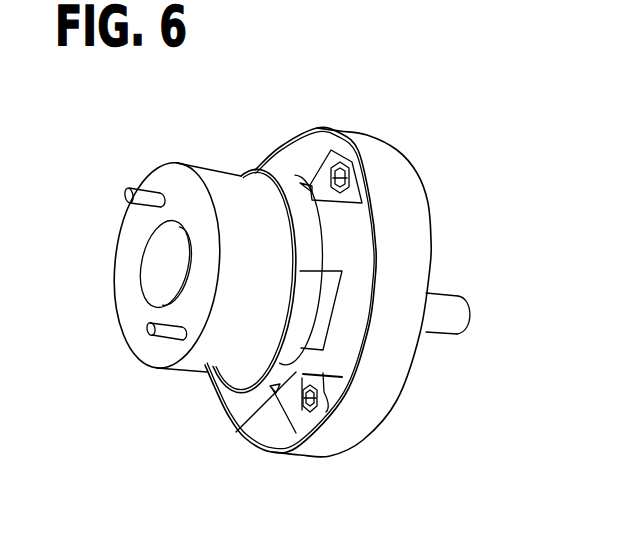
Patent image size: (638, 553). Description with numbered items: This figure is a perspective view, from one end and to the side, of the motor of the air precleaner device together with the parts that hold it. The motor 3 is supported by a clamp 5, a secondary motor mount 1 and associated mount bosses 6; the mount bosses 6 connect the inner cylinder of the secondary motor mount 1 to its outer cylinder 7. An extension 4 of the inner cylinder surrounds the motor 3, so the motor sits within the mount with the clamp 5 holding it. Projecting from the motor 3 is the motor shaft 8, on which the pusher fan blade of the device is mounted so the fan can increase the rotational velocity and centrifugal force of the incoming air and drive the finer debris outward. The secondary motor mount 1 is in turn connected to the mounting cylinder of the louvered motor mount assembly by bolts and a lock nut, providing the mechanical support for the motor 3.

The secondary motor mount 1 is at (368, 141).
The motor 3 is at (165, 167).
The extension 4 is at (243, 433).
The clamp 5 is at (283, 172).
The mount bosses 6 is at (338, 152).
The outer cylinder 7 is at (403, 221).
The motor shaft 8 is at (445, 327).